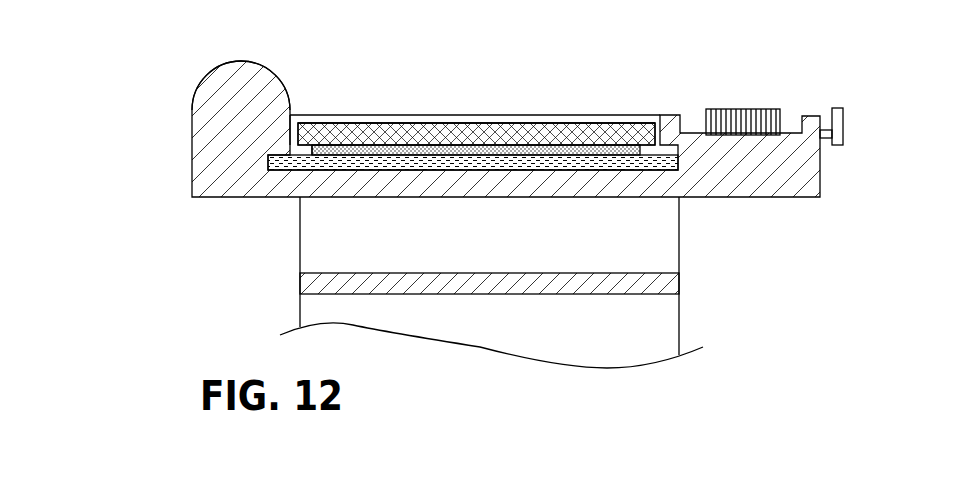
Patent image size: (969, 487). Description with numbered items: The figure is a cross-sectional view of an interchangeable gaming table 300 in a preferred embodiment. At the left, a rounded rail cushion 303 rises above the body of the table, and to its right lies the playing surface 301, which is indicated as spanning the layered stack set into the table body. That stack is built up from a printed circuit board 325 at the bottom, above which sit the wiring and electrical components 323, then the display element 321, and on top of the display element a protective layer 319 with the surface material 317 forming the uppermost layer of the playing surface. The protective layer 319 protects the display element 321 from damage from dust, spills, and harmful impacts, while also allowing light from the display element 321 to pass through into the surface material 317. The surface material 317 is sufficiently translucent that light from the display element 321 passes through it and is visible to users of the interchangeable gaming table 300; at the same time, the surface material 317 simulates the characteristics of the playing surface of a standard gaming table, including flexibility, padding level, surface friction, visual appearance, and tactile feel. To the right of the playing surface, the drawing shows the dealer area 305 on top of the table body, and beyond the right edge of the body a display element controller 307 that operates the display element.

The interchangeable gaming table 300 is at (156, 111).
The playing surface 301 is at (662, 112).
The rail cushion 303 is at (225, 82).
The dealer area 305 is at (740, 110).
The display element controller 307 is at (840, 108).
The surface material 317 is at (358, 113).
The protective layer 319 is at (548, 117).
The display element 321 is at (298, 138).
The wiring and electrical components 323 is at (630, 150).
The printed circuit board 325 is at (615, 163).